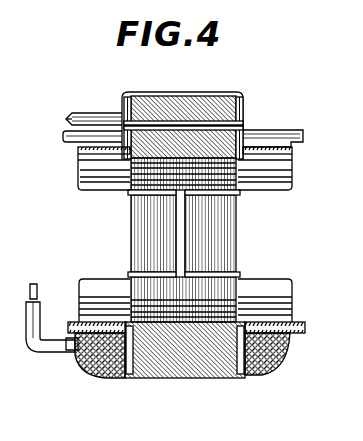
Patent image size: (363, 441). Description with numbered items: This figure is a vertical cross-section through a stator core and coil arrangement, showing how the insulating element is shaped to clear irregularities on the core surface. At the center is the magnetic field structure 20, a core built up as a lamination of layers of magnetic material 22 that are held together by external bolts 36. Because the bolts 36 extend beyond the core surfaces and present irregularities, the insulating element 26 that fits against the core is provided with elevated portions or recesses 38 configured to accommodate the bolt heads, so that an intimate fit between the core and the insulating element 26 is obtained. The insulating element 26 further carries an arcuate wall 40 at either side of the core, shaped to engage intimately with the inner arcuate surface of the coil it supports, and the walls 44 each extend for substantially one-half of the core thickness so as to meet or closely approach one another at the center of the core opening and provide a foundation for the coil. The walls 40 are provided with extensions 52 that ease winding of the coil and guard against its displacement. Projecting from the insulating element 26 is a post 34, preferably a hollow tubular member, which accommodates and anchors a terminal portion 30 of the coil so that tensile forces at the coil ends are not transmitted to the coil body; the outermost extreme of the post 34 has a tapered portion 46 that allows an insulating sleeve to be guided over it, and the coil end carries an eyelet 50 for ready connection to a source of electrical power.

The magnetic field structure 20 is at (165, 252).
The layers of magnetic material 22 is at (146, 233).
The insulating element 26 is at (291, 181).
The terminal portion 30 is at (45, 356).
The post 34 is at (68, 120).
The bolt 36 is at (213, 78).
The elevated portion or recess 38 is at (126, 100).
The arcuate wall 40 is at (82, 180).
The wall 44 is at (140, 194).
The tapered portion 46 is at (66, 118).
The eyelet 50 is at (32, 283).
The extension 52 is at (65, 138).